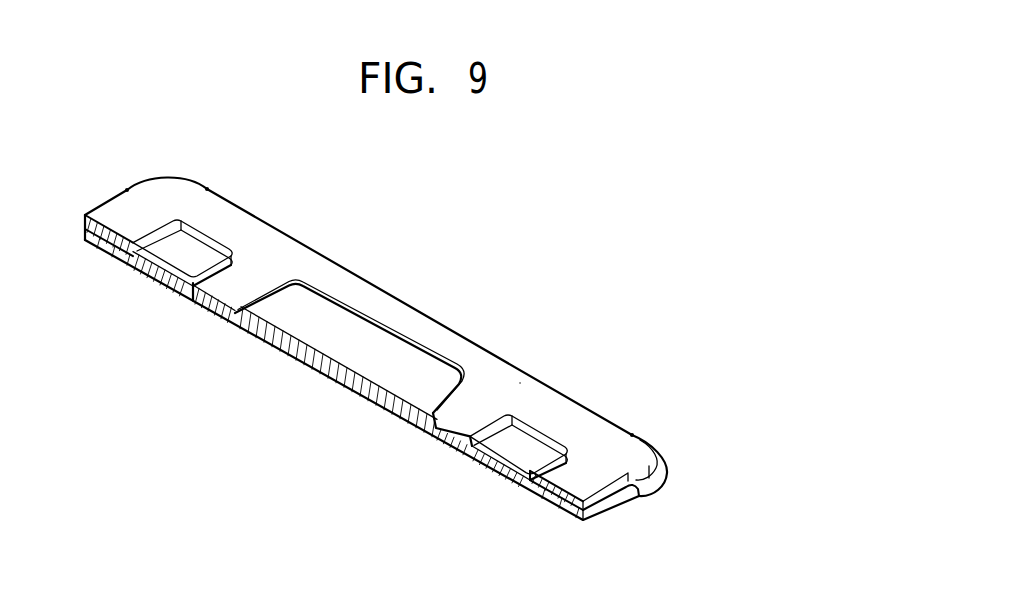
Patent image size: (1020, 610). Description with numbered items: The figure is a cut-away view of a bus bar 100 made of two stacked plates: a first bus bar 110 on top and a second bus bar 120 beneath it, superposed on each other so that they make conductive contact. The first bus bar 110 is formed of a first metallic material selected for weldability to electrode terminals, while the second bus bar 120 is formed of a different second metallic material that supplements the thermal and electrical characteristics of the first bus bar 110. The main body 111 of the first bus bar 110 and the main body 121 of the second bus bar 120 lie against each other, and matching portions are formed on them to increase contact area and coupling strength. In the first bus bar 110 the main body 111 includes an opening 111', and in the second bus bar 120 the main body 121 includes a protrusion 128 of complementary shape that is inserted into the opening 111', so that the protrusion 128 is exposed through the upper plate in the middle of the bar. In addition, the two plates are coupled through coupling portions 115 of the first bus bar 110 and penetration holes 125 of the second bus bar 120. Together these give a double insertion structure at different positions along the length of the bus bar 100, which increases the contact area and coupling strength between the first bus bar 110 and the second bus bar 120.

The bus bar 100 is at (448, 353).
The first bus bar 110 is at (376, 343).
The main body of the first bus bar 111 is at (550, 345).
The opening 111' is at (383, 346).
The coupling portion 115 is at (517, 458).
The second bus bar 120 is at (416, 383).
The main body of the second bus bar 121 is at (330, 372).
The penetration hole 125 is at (467, 458).
The protrusion 128 is at (368, 340).